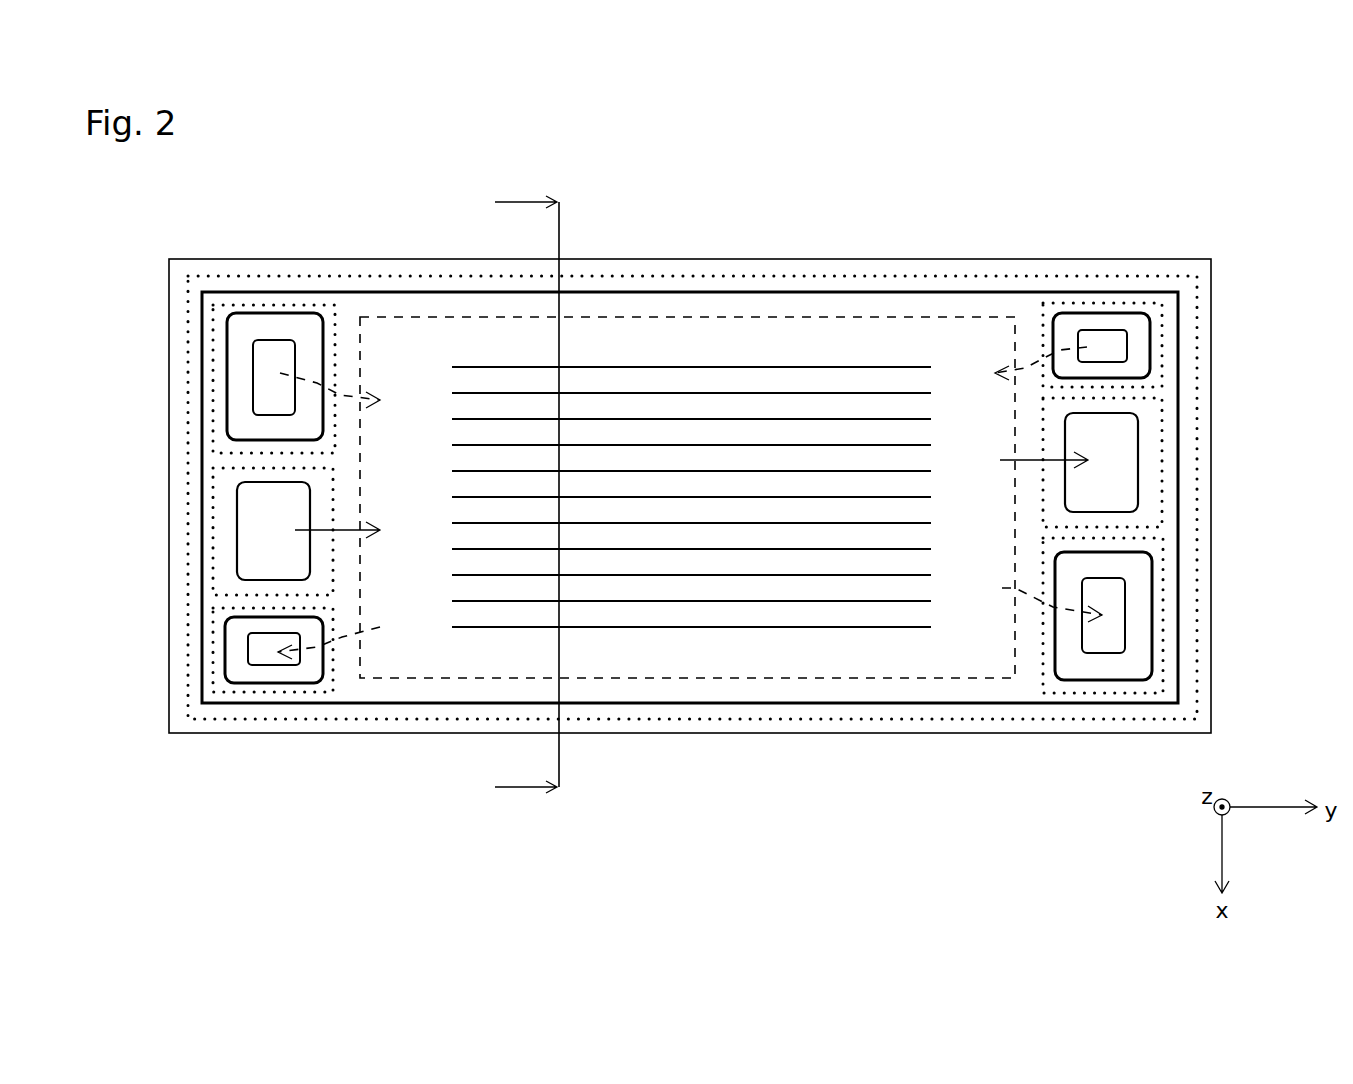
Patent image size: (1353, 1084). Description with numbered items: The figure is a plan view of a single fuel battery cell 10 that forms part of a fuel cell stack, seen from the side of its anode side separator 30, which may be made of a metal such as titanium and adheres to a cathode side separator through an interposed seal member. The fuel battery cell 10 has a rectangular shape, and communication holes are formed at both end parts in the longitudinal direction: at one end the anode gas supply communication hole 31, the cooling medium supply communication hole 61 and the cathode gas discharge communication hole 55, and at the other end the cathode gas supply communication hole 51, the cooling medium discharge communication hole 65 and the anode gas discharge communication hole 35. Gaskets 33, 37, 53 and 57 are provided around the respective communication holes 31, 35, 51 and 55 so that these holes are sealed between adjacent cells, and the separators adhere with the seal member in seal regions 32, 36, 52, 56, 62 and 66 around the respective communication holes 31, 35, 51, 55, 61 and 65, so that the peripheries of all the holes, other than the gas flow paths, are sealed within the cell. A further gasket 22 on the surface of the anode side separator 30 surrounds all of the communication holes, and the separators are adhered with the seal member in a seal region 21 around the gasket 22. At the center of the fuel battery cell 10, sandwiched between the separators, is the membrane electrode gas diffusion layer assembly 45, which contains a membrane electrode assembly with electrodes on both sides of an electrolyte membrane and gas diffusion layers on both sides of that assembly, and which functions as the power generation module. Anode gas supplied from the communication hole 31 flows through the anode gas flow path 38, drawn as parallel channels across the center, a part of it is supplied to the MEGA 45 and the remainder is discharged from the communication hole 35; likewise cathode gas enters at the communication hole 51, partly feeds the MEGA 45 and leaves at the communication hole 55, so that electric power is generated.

The fuel battery cell 10 is at (1215, 143).
The seal region 21 is at (828, 738).
The gasket 22 is at (748, 705).
The anode side separator 30 is at (1208, 260).
The anode gas supply communication hole 31 is at (1117, 347).
The seal region 32 is at (1015, 315).
The gasket 33 is at (1103, 312).
The anode gas discharge communication hole 35 is at (260, 657).
The seal region 36 is at (345, 700).
The gasket 37 is at (227, 662).
The anode gas flow path 38 is at (693, 367).
The membrane electrode gas diffusion layer assembly (MEGA) 45 is at (768, 313).
The cathode gas supply communication hole 51 is at (278, 352).
The seal region 52 is at (366, 312).
The gasket 53 is at (227, 367).
The cathode gas discharge communication hole 55 is at (1105, 645).
The seal region 56 is at (1037, 705).
The gasket 57 is at (1152, 645).
The cooling medium supply communication hole 61 is at (258, 530).
The seal region 62 is at (193, 548).
The cooling medium discharge communication hole 65 is at (1117, 462).
The seal region 66 is at (1172, 485).